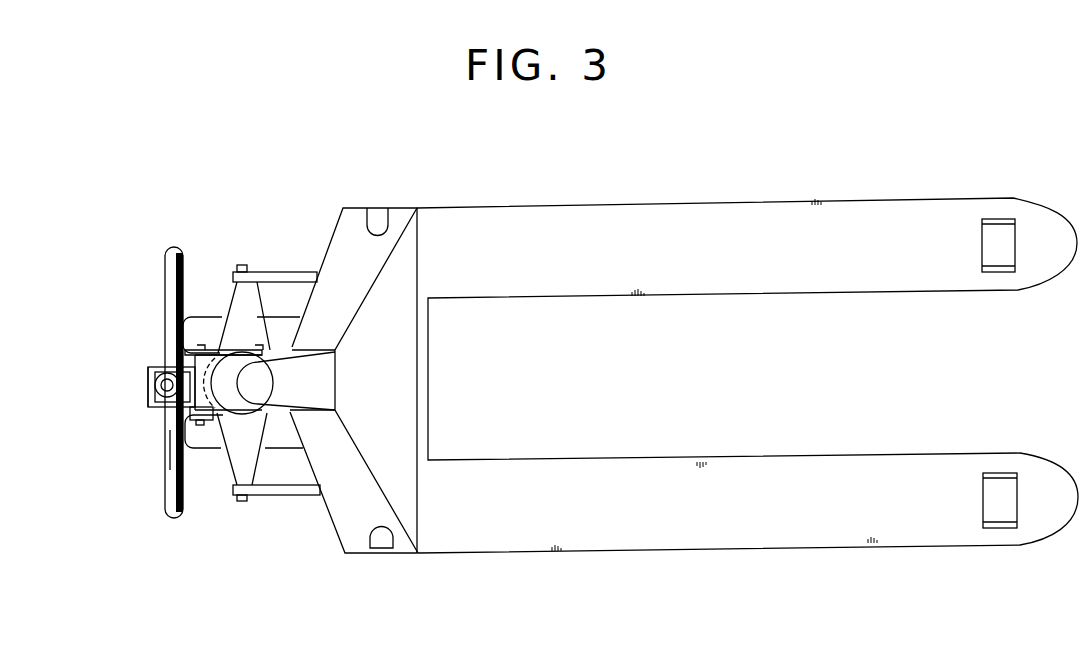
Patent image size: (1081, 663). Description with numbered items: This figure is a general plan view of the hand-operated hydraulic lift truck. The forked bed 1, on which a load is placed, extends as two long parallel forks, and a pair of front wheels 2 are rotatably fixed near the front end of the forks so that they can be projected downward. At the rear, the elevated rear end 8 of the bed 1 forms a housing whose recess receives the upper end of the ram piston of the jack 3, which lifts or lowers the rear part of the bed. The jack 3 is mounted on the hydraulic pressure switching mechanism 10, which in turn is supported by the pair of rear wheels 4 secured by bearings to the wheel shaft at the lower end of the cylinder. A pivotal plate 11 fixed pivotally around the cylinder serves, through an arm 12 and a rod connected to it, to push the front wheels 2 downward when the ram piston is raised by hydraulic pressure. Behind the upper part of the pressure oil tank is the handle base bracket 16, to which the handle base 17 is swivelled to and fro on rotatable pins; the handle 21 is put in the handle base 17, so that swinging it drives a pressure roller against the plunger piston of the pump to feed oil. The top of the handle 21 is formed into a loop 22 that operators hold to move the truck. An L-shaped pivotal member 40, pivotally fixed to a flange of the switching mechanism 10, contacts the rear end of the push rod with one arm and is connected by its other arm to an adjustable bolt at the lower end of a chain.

The forked bed 1 is at (598, 283).
The front wheels 2 is at (988, 250).
The jack 3 is at (152, 293).
The rear wheels 4 is at (208, 327).
The elevated rear end 8 is at (358, 217).
The hydraulic pressure switching mechanism 10 is at (148, 376).
The pivotal plate 11 is at (248, 298).
The arm 12 is at (297, 277).
The handle base bracket 16 is at (203, 384).
The handle base 17 is at (158, 362).
The handle 21 is at (155, 388).
The loop 22 is at (170, 470).
The L-shaped pivotal member 40 is at (203, 424).